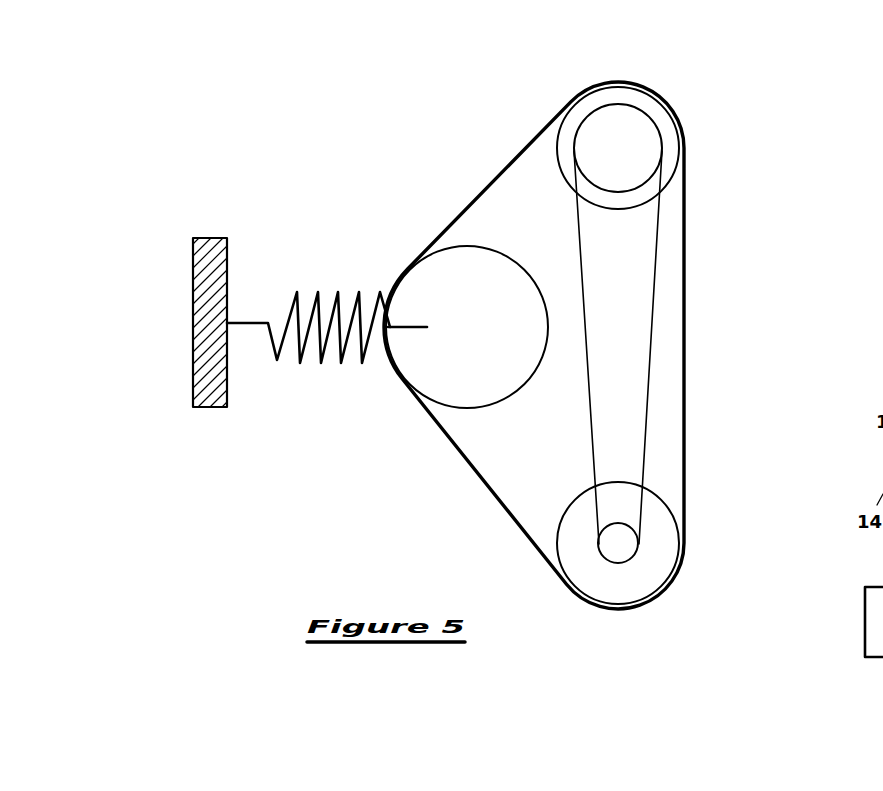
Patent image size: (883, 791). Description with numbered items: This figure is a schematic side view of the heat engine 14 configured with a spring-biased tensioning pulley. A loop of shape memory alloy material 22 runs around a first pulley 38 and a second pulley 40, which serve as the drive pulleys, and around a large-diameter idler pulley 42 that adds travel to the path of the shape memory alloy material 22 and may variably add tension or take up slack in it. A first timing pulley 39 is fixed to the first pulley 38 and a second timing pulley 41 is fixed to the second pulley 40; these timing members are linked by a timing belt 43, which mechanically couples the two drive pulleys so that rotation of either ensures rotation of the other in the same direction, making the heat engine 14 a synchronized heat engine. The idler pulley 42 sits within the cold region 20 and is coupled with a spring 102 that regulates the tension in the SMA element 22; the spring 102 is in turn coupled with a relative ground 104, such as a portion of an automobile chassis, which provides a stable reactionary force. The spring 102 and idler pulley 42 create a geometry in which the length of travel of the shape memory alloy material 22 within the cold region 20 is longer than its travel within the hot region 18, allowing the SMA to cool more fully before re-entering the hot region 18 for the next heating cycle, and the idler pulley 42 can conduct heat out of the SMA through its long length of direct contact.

The heat engine 14 is at (810, 100).
The hot region 18 is at (740, 243).
The cold region 20 is at (562, 345).
The shape memory alloy material 22 is at (508, 166).
The first pulley 38 is at (660, 121).
The first timing pulley 39 is at (641, 159).
The second pulley 40 is at (666, 565).
The second timing pulley 41 is at (630, 540).
The idler pulley 42 is at (488, 338).
The timing belt 43 is at (590, 388).
The spring 102 is at (294, 355).
The relative ground 104 is at (208, 238).